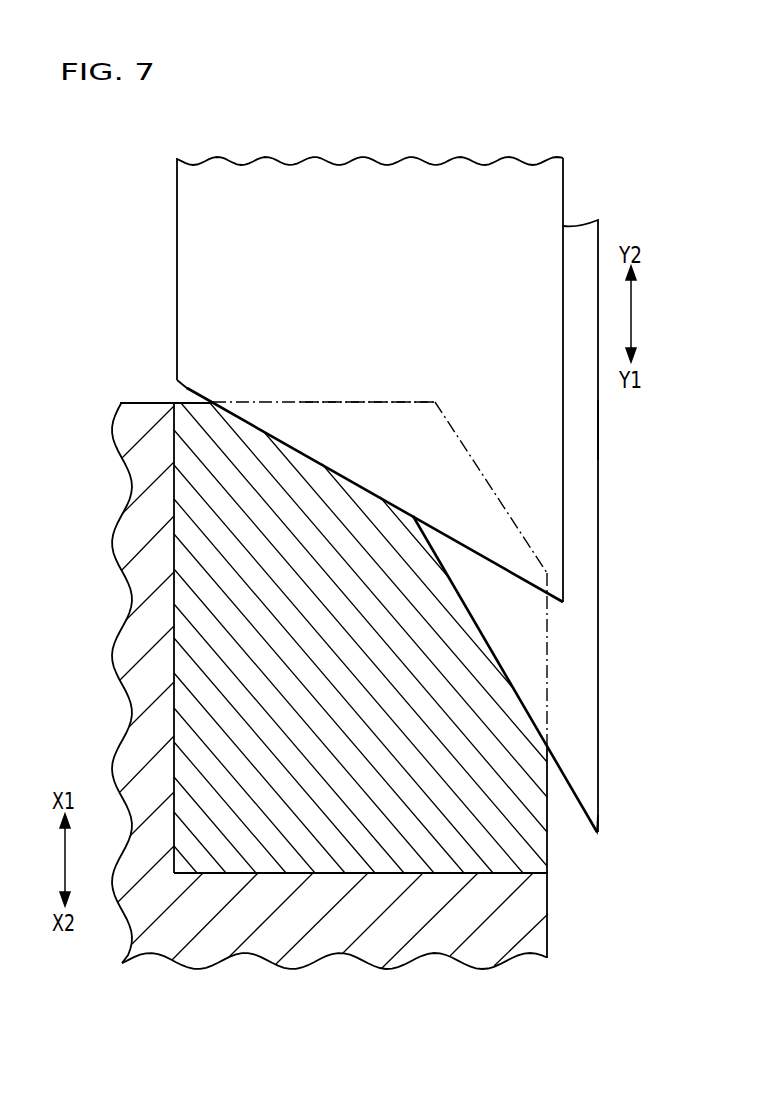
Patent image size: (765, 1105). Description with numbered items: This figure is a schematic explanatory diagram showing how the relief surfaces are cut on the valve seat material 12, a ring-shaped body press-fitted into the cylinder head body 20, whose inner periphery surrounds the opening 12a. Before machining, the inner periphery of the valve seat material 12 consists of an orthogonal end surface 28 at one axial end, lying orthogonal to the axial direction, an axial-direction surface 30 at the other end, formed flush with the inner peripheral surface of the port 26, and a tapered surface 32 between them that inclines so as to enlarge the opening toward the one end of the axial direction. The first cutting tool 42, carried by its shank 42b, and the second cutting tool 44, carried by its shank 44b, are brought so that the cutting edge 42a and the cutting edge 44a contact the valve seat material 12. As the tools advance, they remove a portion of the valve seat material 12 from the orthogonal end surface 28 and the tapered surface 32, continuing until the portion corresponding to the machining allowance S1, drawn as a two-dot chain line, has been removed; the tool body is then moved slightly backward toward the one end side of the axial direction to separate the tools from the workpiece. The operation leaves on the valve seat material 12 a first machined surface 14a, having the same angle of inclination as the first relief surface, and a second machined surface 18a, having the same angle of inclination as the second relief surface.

The valve seat material 12 is at (358, 525).
The opening 12a is at (628, 534).
The first machined surface 14a is at (275, 432).
The second machined surface 18a is at (515, 690).
The cylinder head body 20 is at (375, 940).
The port 26 is at (549, 897).
The orthogonal end surface 28 is at (370, 400).
The axial-direction surface 30 is at (547, 640).
The tapered surface 32 is at (487, 481).
The first cutting tool 42 is at (343, 185).
The cutting edge 42a is at (186, 392).
The shank 42b is at (200, 197).
The second cutting tool 44 is at (600, 575).
The cutting edge 44a is at (588, 818).
The shank 44b is at (585, 429).
The machining allowance S1 is at (416, 430).